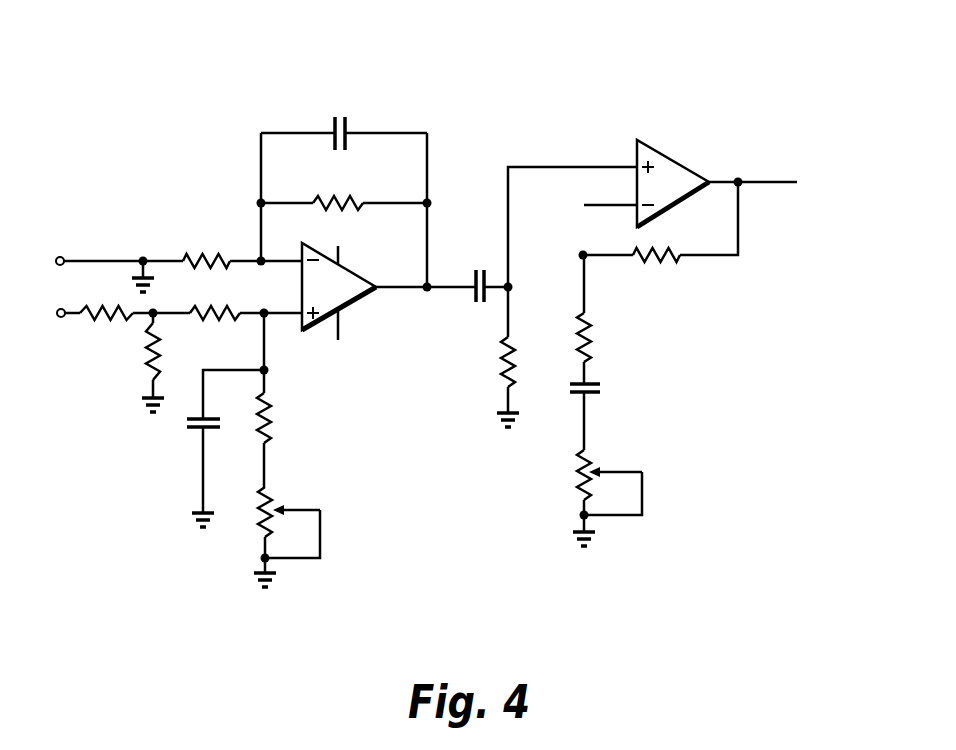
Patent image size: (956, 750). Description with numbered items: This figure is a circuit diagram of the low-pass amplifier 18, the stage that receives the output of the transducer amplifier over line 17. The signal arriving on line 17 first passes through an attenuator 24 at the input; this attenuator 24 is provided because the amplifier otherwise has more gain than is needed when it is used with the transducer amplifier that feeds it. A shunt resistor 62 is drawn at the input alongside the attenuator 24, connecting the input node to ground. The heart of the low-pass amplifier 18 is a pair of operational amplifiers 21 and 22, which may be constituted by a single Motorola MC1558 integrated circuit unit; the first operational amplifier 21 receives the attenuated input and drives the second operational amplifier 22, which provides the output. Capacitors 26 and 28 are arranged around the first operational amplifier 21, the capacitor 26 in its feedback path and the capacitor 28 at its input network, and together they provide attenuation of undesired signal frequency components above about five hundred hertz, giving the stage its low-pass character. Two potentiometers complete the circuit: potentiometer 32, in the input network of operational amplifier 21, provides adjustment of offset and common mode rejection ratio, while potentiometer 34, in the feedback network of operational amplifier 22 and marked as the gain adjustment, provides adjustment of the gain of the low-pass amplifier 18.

The line 17 is at (73, 311).
The attenuator 24 is at (122, 388).
The shunt resistor to ground 62 is at (161, 344).
The capacitor 28 is at (188, 422).
The potentiometer 32 is at (262, 497).
The capacitor 26 is at (348, 127).
The operational amplifier 21 is at (376, 290).
The operational amplifier 22 is at (673, 163).
The potentiometer 34 is at (578, 463).
The low-pass amplifier 18 is at (425, 353).